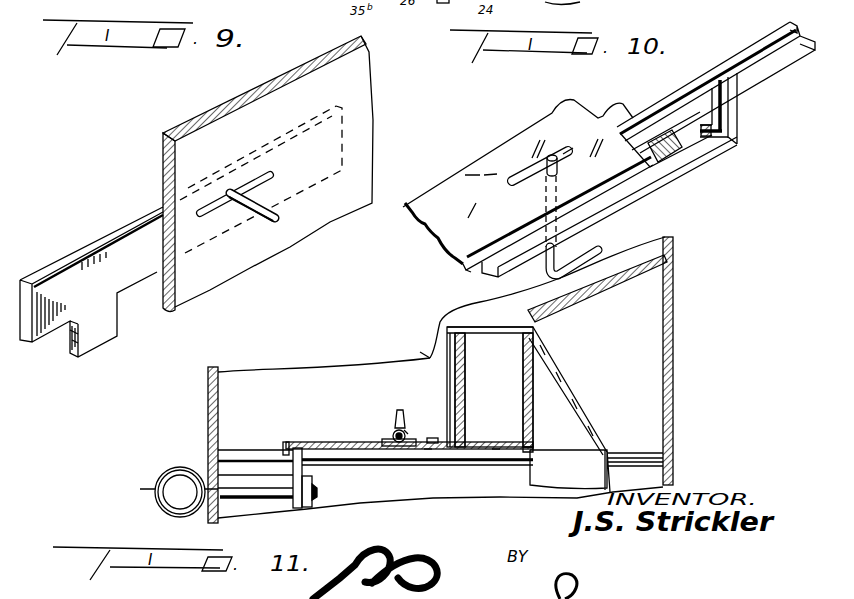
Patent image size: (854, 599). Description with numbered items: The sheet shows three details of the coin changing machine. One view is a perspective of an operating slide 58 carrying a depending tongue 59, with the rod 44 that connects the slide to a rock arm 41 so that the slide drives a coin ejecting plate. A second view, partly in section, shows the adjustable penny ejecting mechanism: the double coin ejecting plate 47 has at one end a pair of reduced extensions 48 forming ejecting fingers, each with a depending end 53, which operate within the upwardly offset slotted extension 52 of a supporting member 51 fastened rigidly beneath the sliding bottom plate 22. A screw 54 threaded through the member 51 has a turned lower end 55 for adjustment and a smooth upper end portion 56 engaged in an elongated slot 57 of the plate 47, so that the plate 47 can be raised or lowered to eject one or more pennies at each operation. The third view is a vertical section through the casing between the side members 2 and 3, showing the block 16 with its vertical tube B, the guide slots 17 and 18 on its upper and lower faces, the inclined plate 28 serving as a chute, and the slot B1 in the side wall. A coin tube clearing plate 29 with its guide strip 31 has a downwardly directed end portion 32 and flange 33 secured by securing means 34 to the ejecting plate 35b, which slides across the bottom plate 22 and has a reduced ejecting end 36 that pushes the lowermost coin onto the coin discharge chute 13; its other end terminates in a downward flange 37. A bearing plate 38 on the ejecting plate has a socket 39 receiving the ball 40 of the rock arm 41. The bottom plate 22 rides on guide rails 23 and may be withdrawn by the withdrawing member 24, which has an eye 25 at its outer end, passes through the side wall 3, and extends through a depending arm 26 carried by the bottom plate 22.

In FIG. 11, the side member 2 is at (673, 353).
In FIG. 11, the side wall 3 is at (208, 408).
In FIG. 11, the coin discharge chute 13 is at (593, 450).
In FIG. 11, the block 16 is at (535, 388).
In FIG. 11, the guide slot 17 is at (535, 333).
In FIG. 11, the guide slot 18 is at (530, 447).
In FIG. 10, the bottom plate 22 is at (655, 173).
In FIG. 11, the bottom plate 22 is at (327, 444).
In FIG. 11, the guide rail 23 is at (235, 453).
In FIG. 11, the withdrawing member 24 is at (250, 503).
In FIG. 11, the eye 25 is at (155, 488).
In FIG. 11, the depending arm 26 is at (293, 478).
In FIG. 11, the inclined plate 28 is at (590, 433).
In FIG. 11, the coin tube clearing plate 29 is at (428, 356).
In FIG. 11, the guide strip 31 is at (496, 371).
In FIG. 11, the downwardly directed end portion 32 is at (450, 383).
In FIG. 11, the flange 33 is at (430, 449).
In FIG. 11, the securing means 34 is at (435, 447).
In FIG. 11, the ejecting plate 35b is at (300, 447).
In FIG. 11, the ejecting end 36 is at (497, 449).
In FIG. 11, the downward flange 37 is at (282, 448).
In FIG. 11, the bearing plate 38 is at (383, 441).
In FIG. 11, the socket 39 is at (393, 432).
In FIG. 11, the ball 40 is at (405, 430).
In FIG. 11, the rock arm 41 is at (400, 410).
In FIG. 9, the rod 44 is at (282, 209).
In FIG. 10, the coin ejecting plate 47 is at (500, 146).
In FIG. 10, the reduced extension 48 is at (712, 66).
In FIG. 10, the supporting member 51 is at (720, 153).
In FIG. 10, the slotted extension 52 is at (773, 27).
In FIG. 10, the depending end 53 is at (752, 87).
In FIG. 10, the screw 54 is at (558, 249).
In FIG. 10, the turned lower end 55 is at (620, 241).
In FIG. 10, the smooth upper end portion 56 is at (550, 152).
In FIG. 10, the elongated slot 57 is at (567, 146).
In FIG. 9, the operating slide 58 is at (112, 234).
In FIG. 9, the depending tongue 59 is at (94, 350).
In FIG. 11, the vertical tube B is at (517, 365).
In FIG. 11, the slot B1 is at (622, 278).